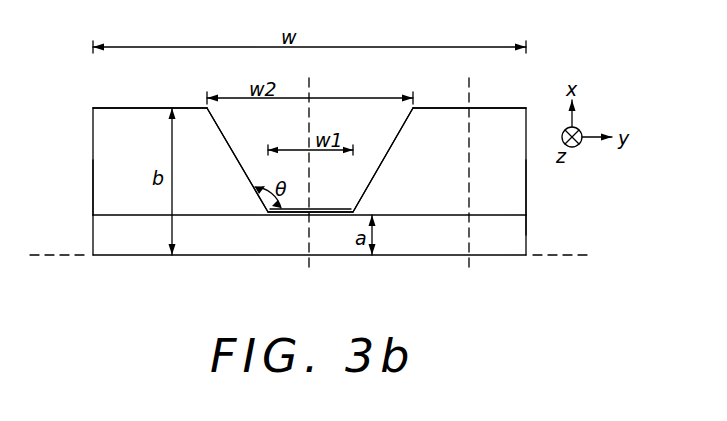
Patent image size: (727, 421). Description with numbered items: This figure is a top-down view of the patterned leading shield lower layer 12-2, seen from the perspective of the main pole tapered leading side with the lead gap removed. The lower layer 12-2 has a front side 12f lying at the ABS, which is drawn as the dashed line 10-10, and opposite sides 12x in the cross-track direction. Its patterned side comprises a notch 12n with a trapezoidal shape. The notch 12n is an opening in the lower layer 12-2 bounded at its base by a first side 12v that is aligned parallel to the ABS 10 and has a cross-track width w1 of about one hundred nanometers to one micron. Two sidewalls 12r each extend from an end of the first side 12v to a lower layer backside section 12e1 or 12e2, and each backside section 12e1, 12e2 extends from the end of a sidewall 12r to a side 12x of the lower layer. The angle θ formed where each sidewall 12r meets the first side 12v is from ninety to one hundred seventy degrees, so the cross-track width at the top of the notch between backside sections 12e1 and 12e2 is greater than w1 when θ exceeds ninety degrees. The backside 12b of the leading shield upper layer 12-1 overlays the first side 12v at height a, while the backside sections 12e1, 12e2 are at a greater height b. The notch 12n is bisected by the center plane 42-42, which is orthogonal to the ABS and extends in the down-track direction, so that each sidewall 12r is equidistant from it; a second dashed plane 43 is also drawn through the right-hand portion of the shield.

The ABS 10 is at (312, 256).
The LS upper layer 12-1 is at (510, 245).
The patterned LS lower layer 12-2 is at (102, 146).
The side of the LS lower layer 12x is at (93, 176).
The backside of LS upper layer 12b is at (510, 215).
The front side of the LS lower layer 12f is at (129, 257).
The LS lower layer backside section 12e1 is at (104, 108).
The LS lower layer backside section 12e2 is at (433, 100).
The sidewall 12r is at (237, 160).
The first side 12v is at (292, 213).
The notch 12n is at (340, 192).
The center plane 42 is at (310, 175).
The axis of right portion 43 is at (470, 175).